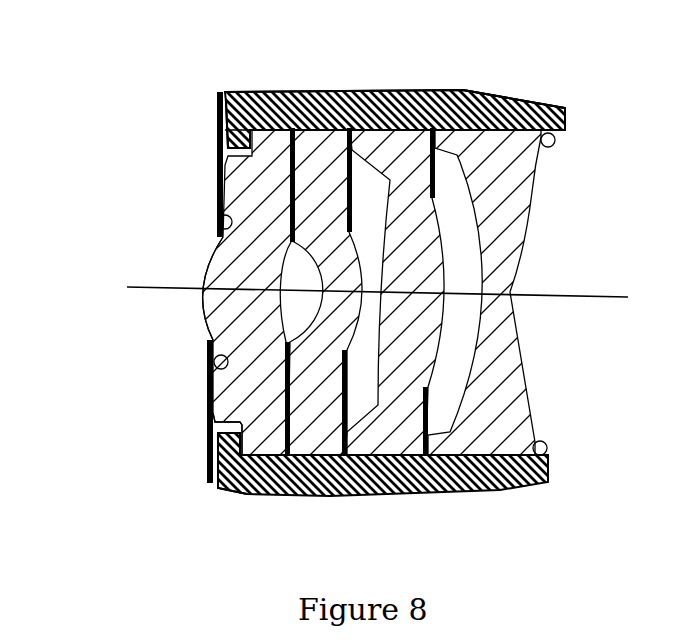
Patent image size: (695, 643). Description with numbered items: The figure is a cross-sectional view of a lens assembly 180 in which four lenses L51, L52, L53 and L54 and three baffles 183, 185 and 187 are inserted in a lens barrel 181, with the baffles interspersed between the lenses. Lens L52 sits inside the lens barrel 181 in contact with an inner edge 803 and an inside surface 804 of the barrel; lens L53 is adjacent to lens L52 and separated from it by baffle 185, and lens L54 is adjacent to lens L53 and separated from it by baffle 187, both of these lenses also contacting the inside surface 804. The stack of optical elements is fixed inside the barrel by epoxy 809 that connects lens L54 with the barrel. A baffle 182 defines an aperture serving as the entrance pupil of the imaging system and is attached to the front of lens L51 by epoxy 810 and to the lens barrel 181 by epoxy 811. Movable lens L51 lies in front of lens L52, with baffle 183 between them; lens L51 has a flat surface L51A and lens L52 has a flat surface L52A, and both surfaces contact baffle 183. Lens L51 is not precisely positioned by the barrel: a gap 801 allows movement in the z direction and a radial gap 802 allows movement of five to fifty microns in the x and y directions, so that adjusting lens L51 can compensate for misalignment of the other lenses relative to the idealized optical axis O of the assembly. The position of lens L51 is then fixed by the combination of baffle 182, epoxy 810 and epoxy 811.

The lens assembly 180 is at (640, 111).
The lens barrel 181 is at (355, 90).
The baffle 182 is at (207, 342).
The baffle 183 is at (207, 375).
The baffle 185 is at (372, 122).
The baffle 187 is at (483, 98).
The gap 801 is at (230, 103).
The radial gap 802 is at (263, 93).
The inner edge 803 is at (290, 123).
The inside surface 804 is at (423, 120).
The epoxy 809 is at (548, 453).
The epoxy 810 is at (213, 217).
The epoxy 811 is at (207, 463).
The movable lens L51 is at (240, 472).
The flat surface L51A is at (207, 400).
The flat surface L52A is at (240, 433).
The lens L52 is at (330, 440).
The lens L53 is at (387, 440).
The lens L54 is at (475, 435).
The optical axis O is at (580, 297).